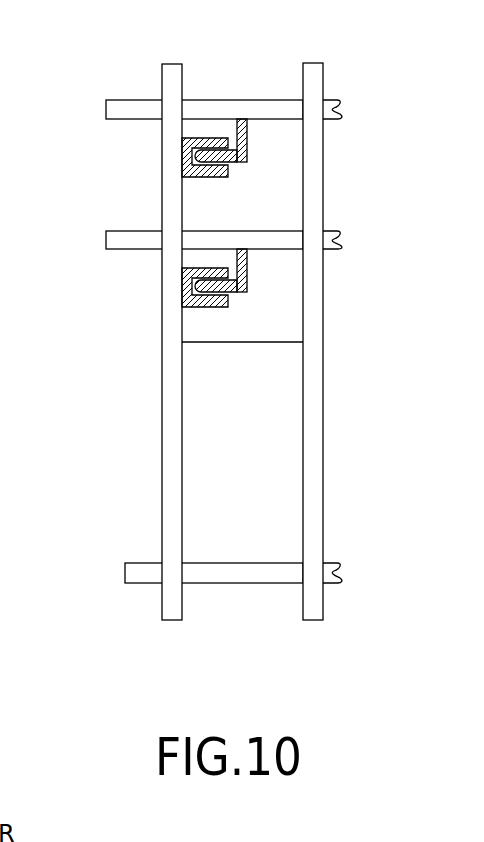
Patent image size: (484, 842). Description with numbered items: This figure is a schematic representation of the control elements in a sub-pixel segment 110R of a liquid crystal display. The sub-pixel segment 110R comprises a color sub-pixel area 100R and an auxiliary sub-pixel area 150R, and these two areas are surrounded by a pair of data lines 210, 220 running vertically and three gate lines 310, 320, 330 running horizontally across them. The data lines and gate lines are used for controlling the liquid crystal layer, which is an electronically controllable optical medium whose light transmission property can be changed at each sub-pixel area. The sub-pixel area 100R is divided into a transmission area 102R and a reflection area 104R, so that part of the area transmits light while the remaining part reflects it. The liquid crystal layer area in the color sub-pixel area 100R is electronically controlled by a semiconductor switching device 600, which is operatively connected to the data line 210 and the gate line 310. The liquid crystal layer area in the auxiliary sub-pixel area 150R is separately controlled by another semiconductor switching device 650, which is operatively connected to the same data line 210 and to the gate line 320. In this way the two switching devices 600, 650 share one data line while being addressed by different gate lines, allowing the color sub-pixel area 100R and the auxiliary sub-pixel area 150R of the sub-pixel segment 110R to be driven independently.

The data line 210 is at (162, 73).
The data line 220 is at (323, 72).
The gate line 310 is at (127, 120).
The gate line 320 is at (133, 250).
The gate line 330 is at (133, 563).
The semiconductor switching device 650 is at (238, 176).
The semiconductor switching device 600 is at (257, 286).
The sub-pixel area 100R is at (152, 257).
The transmission area 102R is at (356, 465).
The reflection area 104R is at (356, 308).
The auxiliary sub-pixel area 150R is at (354, 196).
The sub-pixel segment 110R is at (189, 639).